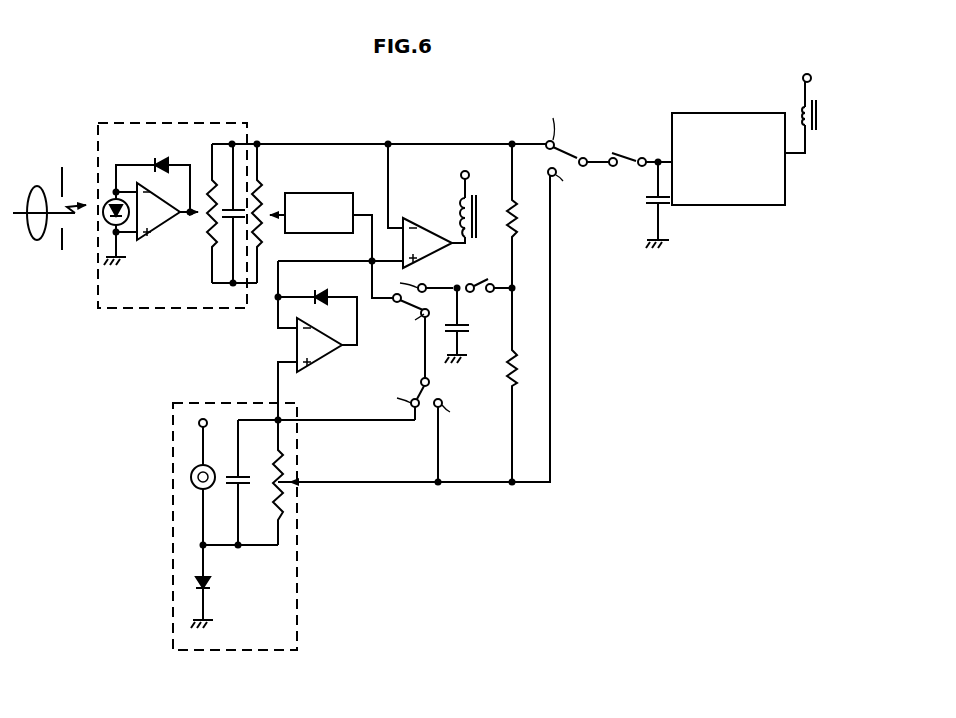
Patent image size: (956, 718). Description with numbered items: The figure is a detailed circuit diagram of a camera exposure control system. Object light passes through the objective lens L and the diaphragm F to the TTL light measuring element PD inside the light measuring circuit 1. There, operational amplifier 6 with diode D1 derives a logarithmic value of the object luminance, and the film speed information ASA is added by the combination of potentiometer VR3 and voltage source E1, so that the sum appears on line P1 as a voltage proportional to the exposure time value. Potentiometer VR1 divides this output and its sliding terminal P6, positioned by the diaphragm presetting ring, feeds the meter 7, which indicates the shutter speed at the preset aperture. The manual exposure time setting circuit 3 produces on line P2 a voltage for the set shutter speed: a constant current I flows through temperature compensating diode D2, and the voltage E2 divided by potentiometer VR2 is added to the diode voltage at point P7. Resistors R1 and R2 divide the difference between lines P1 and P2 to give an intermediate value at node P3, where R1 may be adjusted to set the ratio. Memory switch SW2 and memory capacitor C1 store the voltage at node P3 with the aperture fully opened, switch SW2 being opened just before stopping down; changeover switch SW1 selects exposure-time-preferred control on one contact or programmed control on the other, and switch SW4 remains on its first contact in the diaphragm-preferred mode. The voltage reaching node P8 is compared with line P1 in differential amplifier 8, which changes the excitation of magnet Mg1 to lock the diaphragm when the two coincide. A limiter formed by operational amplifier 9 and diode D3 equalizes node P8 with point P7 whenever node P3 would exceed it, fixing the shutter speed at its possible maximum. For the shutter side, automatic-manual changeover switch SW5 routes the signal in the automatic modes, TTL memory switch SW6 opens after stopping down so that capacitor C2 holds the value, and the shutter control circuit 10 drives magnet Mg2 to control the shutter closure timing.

The light measuring circuit 1 is at (155, 122).
The manual exposure time setting circuit 3 is at (197, 402).
The operational amplifier 6 is at (148, 241).
The meter 7 is at (326, 193).
The differential amplifier 8 is at (446, 242).
The operational amplifier 9 is at (338, 350).
The shutter control circuit 10 is at (733, 206).
The objective lens L is at (37, 240).
The diaphragm F is at (62, 250).
The TTL light measuring element PD is at (115, 198).
The diode D1 is at (155, 165).
The film speed setting ASA is at (204, 206).
The potentiometer VR3 is at (207, 222).
The voltage source E1 is at (230, 232).
The potentiometer VR1 is at (279, 213).
The sliding terminal P6 is at (275, 210).
The line P1 is at (318, 143).
The node P8 is at (370, 260).
The magnet Mg1 is at (462, 205).
The resistor R1 is at (514, 225).
The resistor R2 is at (514, 380).
The node P3 is at (515, 290).
The changeover switch SW1 is at (410, 320).
The memory switch SW2 is at (482, 283).
The memory capacitor C1 is at (462, 328).
The switch SW4 is at (432, 385).
The diode D3 is at (318, 294).
The point P7 is at (277, 418).
The constant current I is at (195, 472).
The voltage source E2 is at (247, 484).
The potentiometer VR2 is at (292, 498).
The line P2 is at (357, 483).
The diode D2 is at (210, 576).
The automatic-manual changeover switch SW5 is at (565, 148).
The TTL memory switch SW6 is at (635, 150).
The capacitor C2 is at (665, 206).
The magnet Mg2 is at (803, 112).